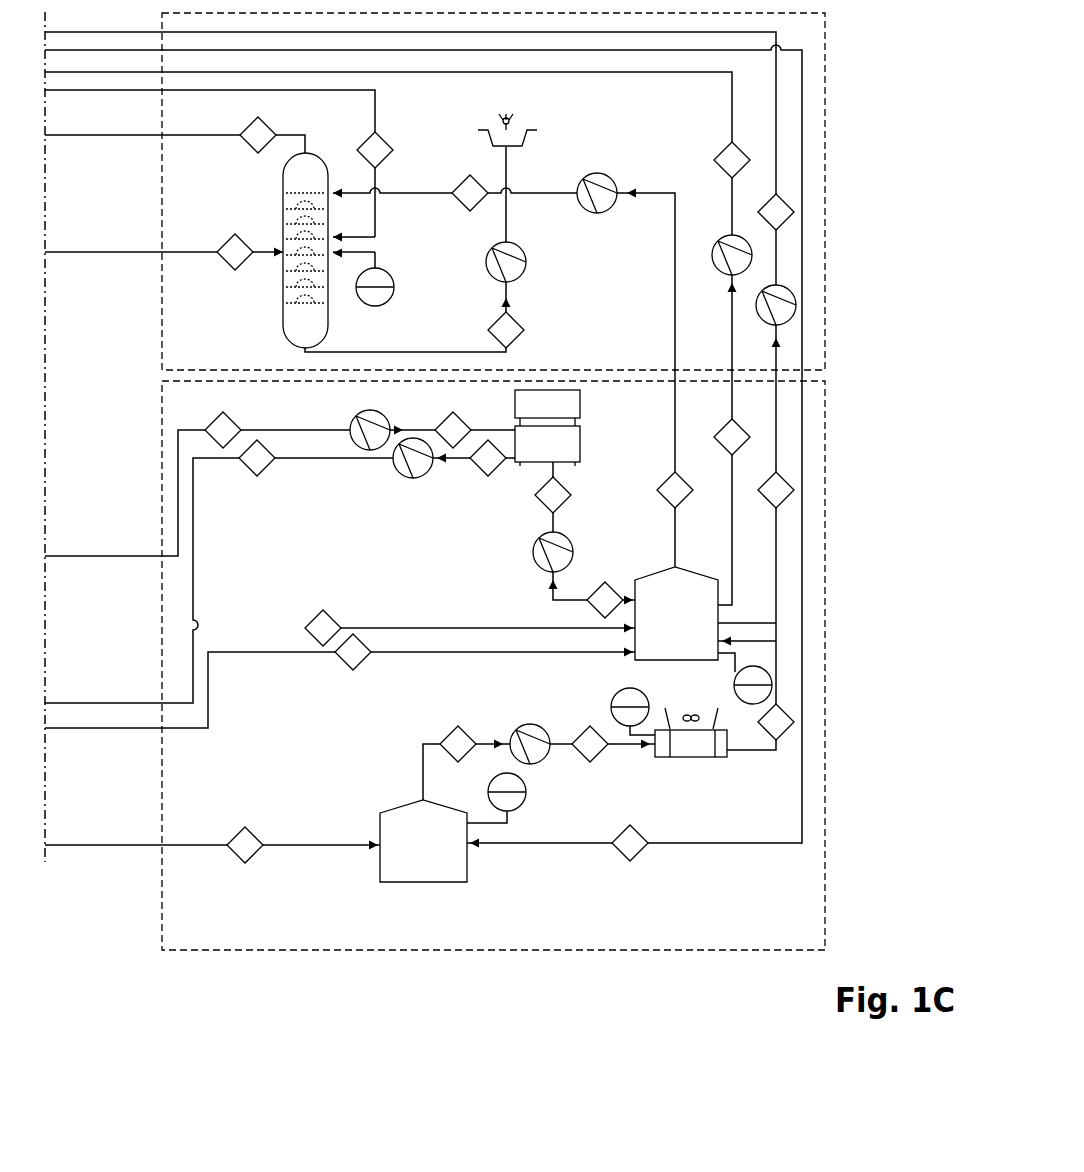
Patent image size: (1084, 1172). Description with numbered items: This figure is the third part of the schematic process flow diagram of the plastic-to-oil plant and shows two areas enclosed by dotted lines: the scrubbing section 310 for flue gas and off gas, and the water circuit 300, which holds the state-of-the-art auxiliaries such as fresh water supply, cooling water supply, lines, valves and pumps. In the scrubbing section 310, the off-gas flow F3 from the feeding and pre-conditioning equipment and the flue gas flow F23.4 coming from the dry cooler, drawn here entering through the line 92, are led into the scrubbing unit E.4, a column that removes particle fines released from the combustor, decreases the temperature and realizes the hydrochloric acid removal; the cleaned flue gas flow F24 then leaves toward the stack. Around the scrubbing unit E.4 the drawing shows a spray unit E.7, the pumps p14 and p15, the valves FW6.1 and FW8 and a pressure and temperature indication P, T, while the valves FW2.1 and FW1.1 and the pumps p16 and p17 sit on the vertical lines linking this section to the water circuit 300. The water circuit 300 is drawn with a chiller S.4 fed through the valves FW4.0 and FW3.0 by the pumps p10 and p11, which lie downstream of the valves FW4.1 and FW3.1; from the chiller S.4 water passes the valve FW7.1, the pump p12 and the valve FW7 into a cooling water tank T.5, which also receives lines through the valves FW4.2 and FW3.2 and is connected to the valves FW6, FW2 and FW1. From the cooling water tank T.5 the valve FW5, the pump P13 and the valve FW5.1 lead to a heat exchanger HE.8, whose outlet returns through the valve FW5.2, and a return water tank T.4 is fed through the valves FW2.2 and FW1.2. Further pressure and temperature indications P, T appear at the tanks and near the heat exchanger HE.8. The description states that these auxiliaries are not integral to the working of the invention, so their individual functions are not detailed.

The scrubbing section 310 is at (162, 172).
The water circuit 300 is at (162, 928).
The supply line 92 is at (100, 255).
The cleaned flue gas flow F24 is at (246, 148).
The flue gas flow F23.4 is at (228, 266).
The scrubbing unit E.4 is at (328, 331).
The off-gas flow F3 is at (388, 138).
The spray basin E.7 is at (532, 141).
The pump p14 is at (606, 176).
The water valve FW6.1 is at (460, 207).
The pump p15 is at (524, 268).
The water valve FW8 is at (518, 340).
The water valve FW2.1 is at (745, 172).
The water valve FW1.1 is at (789, 225).
The pump p16 is at (736, 275).
The pump p17 is at (786, 325).
The water valve FW4.1 is at (210, 422).
The water valve FW3.1 is at (245, 466).
The pump p10 is at (352, 418).
The pump p11 is at (397, 467).
The water valve FW4.0 is at (441, 445).
The water valve FW3.0 is at (476, 472).
The chiller S.4 is at (580, 440).
The water valve FW7.1 is at (630, 456).
The pump p12 is at (538, 562).
The water valve FW7 is at (615, 590).
The water valve FW6 is at (688, 503).
The water valve FW2 is at (745, 450).
The water valve FW1 is at (789, 503).
The cooling water tank T.5 is at (718, 615).
The water valve FW4.2 is at (313, 615).
The water valve FW3.2 is at (345, 665).
The water valve FW5 is at (450, 732).
The pump P13 is at (518, 732).
The water valve FW5.1 is at (582, 732).
The water valve FW5.2 is at (789, 735).
The heat exchanger HE.8 is at (695, 757).
The water valve FW2.2 is at (255, 832).
The return water tank T.4 is at (420, 882).
The water valve FW1.2 is at (618, 857).
The pressure and temperature sensor P, T is at (392, 280).